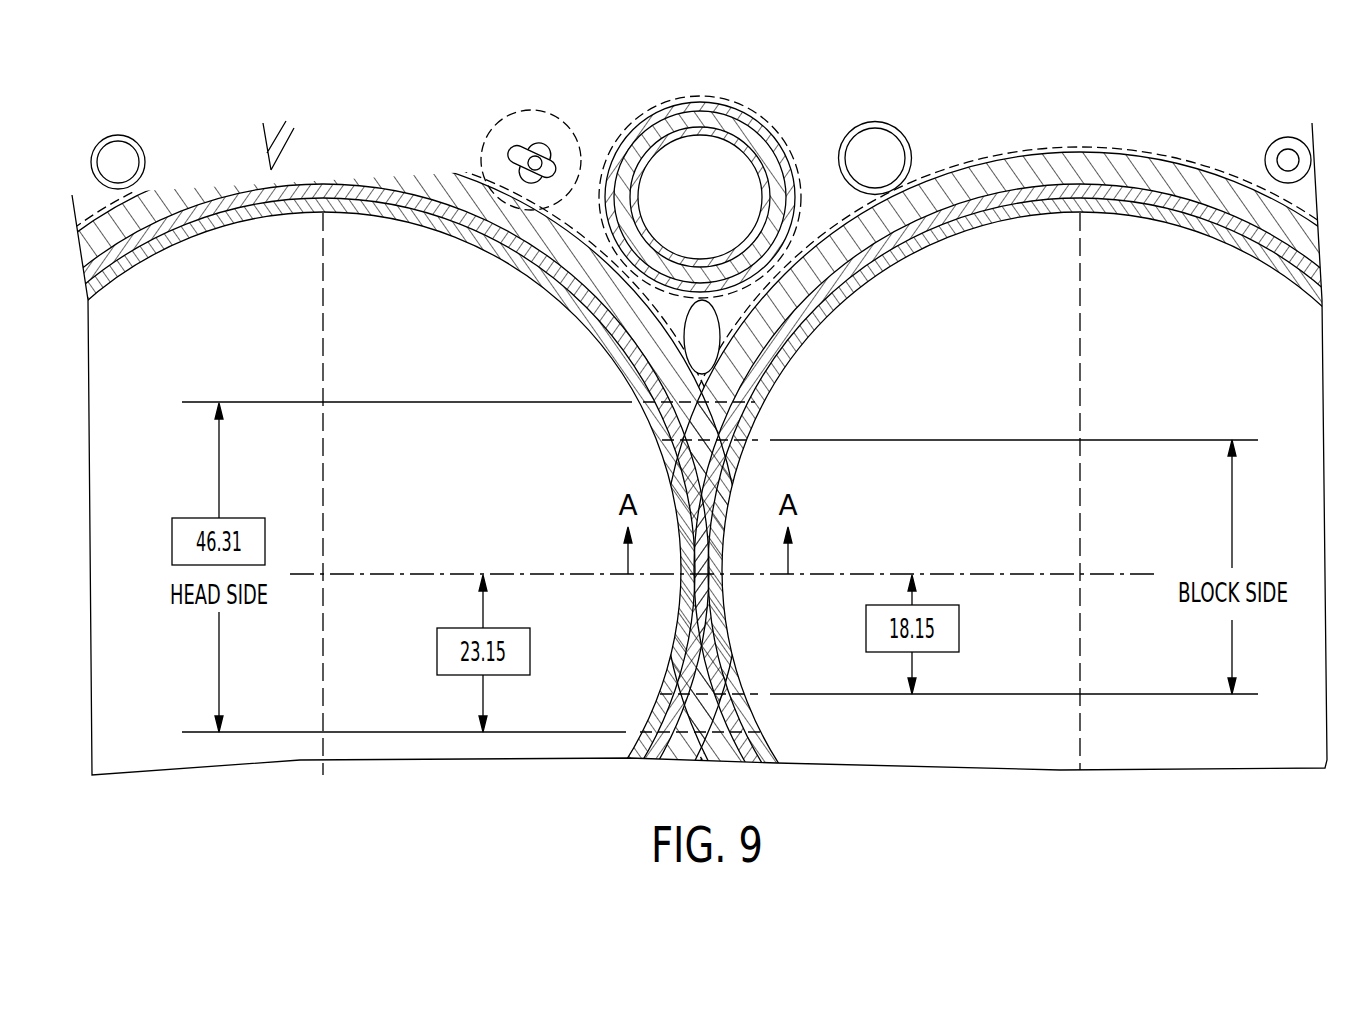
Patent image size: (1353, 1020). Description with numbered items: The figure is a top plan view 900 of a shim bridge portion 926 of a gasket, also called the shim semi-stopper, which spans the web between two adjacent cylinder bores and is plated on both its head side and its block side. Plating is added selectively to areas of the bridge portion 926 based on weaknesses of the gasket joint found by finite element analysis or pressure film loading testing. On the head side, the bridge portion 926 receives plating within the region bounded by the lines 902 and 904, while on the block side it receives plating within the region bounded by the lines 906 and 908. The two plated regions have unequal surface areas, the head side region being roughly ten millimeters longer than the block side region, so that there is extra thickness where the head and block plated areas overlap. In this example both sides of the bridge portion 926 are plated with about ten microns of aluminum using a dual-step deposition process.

The top plan view 900 is at (788, 86).
The head side plating region boundary 902 is at (645, 405).
The head side plating region boundary 904 is at (645, 733).
The block side plating region boundary 906 is at (753, 438).
The block side plating region boundary 908 is at (748, 694).
The shim bridge portion 926 is at (706, 520).